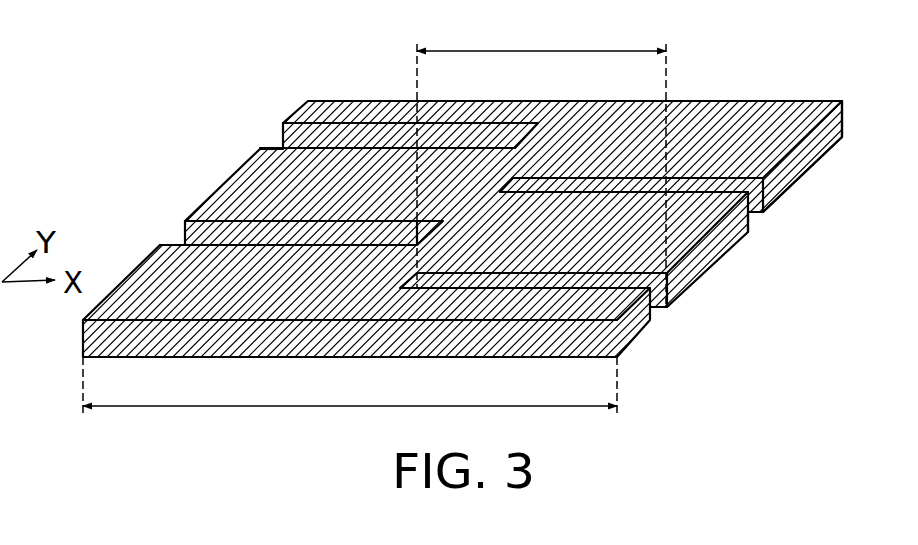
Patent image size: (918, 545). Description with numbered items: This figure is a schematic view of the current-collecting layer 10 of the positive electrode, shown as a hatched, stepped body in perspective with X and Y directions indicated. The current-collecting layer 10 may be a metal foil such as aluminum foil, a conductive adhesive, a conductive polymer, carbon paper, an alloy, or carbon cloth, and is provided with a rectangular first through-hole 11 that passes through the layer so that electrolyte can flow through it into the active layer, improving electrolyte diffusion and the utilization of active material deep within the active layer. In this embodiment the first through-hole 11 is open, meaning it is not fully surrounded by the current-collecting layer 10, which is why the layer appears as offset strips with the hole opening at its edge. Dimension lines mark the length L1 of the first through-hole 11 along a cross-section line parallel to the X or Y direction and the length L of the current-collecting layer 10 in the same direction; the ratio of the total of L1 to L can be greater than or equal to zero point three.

The current-collecting layer 10 is at (703, 113).
The first through-hole 11 is at (757, 196).
The length of the first through-hole L1 is at (541, 159).
The length of the current-collecting layer L is at (350, 385).